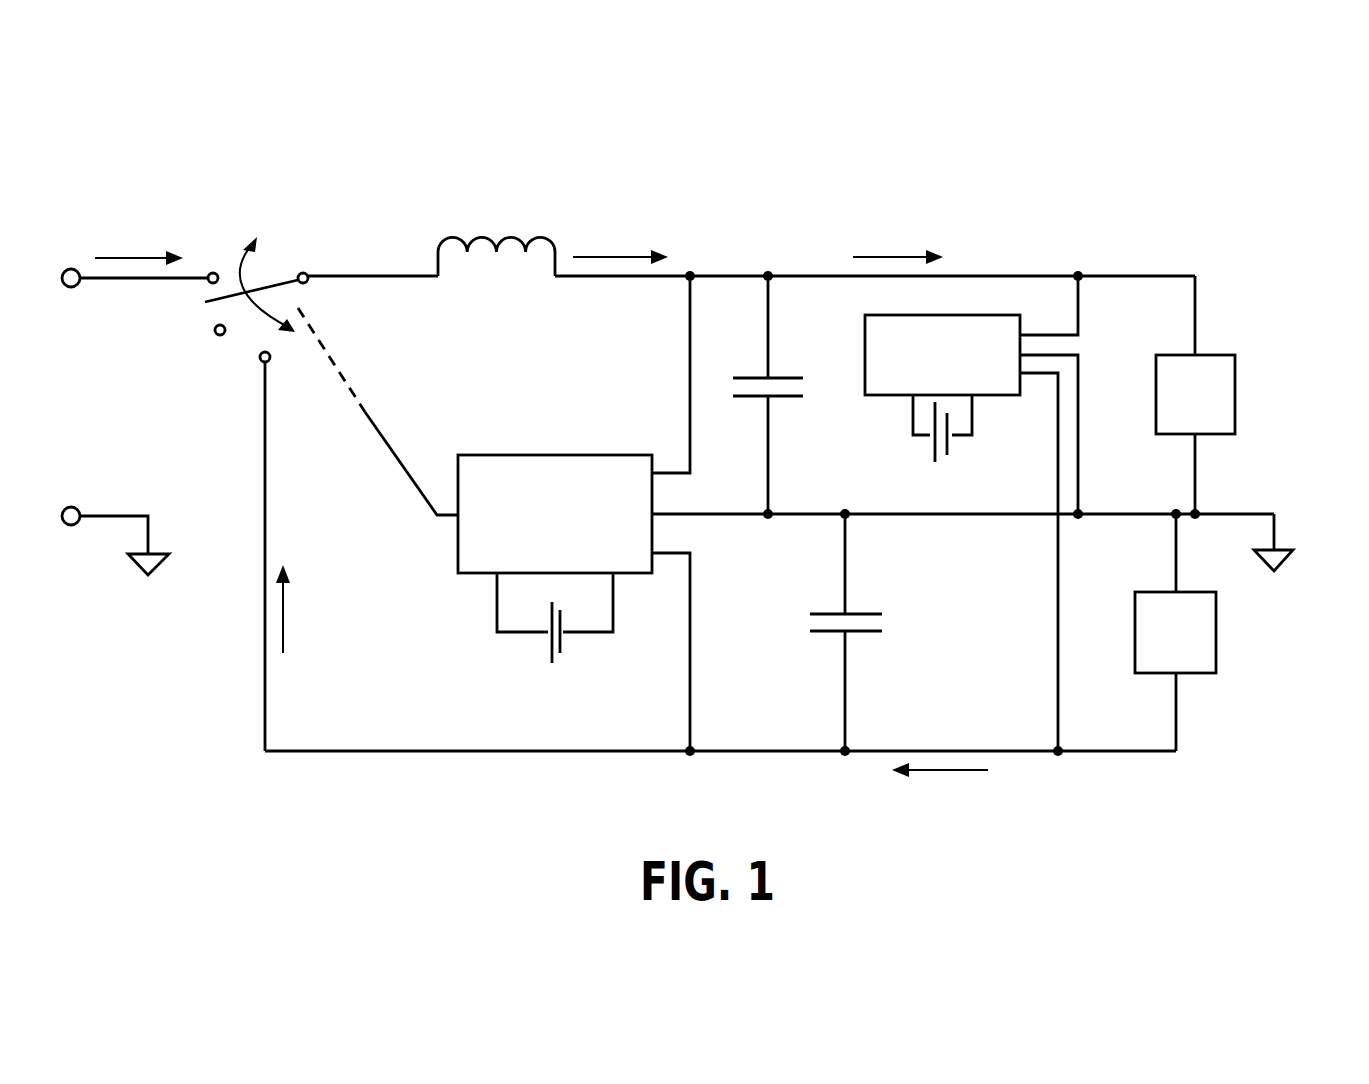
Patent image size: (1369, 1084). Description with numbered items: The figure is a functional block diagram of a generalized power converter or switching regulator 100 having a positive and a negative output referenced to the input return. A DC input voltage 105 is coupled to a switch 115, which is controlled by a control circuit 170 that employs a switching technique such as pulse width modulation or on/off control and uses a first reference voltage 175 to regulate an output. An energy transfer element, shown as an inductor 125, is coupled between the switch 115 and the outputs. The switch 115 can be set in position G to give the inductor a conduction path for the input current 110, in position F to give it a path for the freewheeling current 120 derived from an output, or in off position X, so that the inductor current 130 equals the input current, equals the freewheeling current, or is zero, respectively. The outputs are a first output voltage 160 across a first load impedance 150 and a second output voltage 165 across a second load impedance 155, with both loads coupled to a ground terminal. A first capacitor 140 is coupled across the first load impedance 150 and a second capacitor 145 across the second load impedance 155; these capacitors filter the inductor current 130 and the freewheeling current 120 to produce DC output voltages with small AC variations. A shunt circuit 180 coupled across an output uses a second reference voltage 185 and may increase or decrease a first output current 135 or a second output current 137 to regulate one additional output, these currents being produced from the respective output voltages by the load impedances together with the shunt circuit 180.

The power converter 100 is at (733, 113).
The DC input voltage VG 105 is at (85, 378).
The input current IG 110 is at (112, 237).
The switch S1 115 is at (317, 262).
The freewheeling current IF 120 is at (300, 600).
The inductor L1 125 is at (497, 233).
The inductor current IL 130 is at (637, 237).
The current I1 135 is at (912, 235).
The current I2 137 is at (898, 788).
The capacitor C1 140 is at (758, 367).
The capacitor C2 145 is at (807, 602).
The load impedance Z1 150 is at (1173, 346).
The load impedance Z2 155 is at (1154, 583).
The output voltage V1 160 is at (1274, 368).
The output voltage V2 165 is at (1260, 610).
The control circuit 170 is at (560, 447).
The reference voltage VREF1 175 is at (532, 640).
The shunt circuit 180 is at (860, 341).
The reference voltage VREF2 185 is at (918, 448).